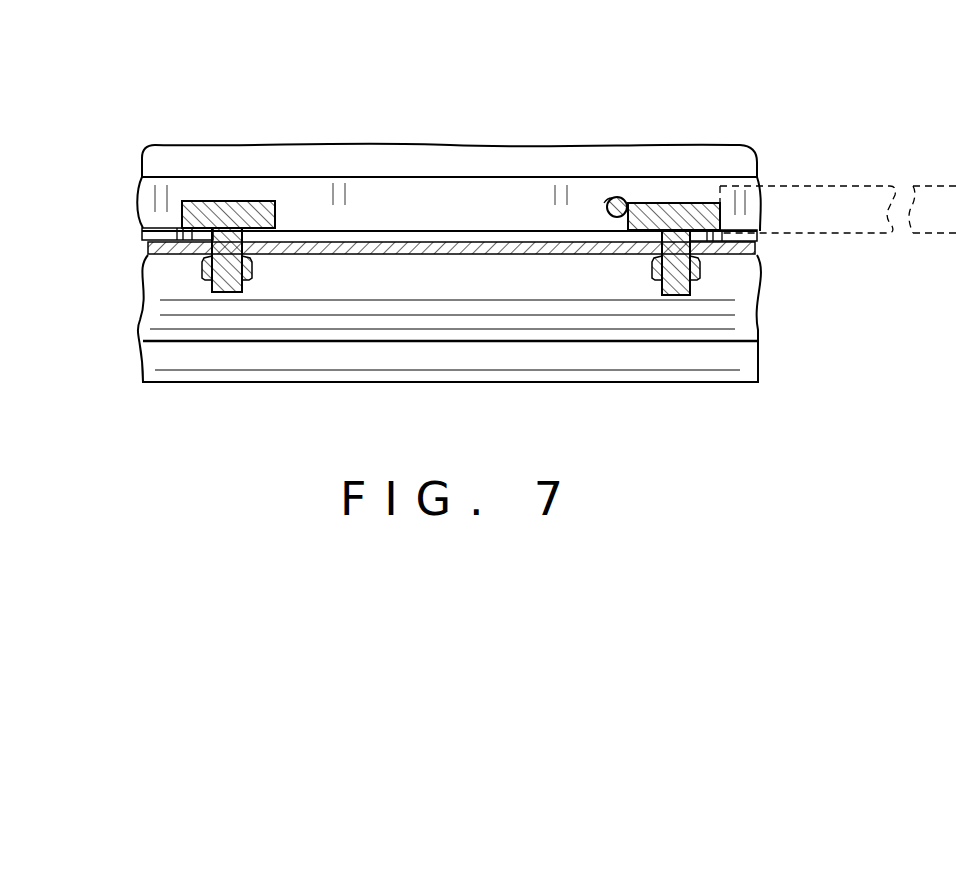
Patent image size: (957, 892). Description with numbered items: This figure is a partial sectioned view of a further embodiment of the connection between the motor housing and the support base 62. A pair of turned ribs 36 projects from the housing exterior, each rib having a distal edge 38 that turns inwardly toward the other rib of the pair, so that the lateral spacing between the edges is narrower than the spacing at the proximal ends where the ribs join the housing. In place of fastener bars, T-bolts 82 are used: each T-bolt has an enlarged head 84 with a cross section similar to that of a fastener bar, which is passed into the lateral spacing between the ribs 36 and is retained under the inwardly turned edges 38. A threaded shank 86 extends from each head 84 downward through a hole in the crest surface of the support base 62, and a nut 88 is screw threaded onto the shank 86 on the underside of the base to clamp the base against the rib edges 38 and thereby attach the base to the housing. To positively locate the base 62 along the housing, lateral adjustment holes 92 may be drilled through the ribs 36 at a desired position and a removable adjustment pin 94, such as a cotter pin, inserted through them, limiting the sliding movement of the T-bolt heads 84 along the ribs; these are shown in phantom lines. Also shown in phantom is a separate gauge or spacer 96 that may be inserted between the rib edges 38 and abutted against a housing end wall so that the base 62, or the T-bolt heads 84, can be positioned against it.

The turned rib 36 is at (428, 203).
The distal edge 38 is at (475, 235).
The support base 62 is at (320, 305).
The T-bolt 82 is at (168, 216).
The enlarged head 84 is at (241, 200).
The threaded shank 86 is at (215, 290).
The nut 88 is at (202, 266).
The adjustment hole 92 is at (629, 199).
The adjustment pin 94 is at (605, 202).
The spacer 96 is at (795, 186).